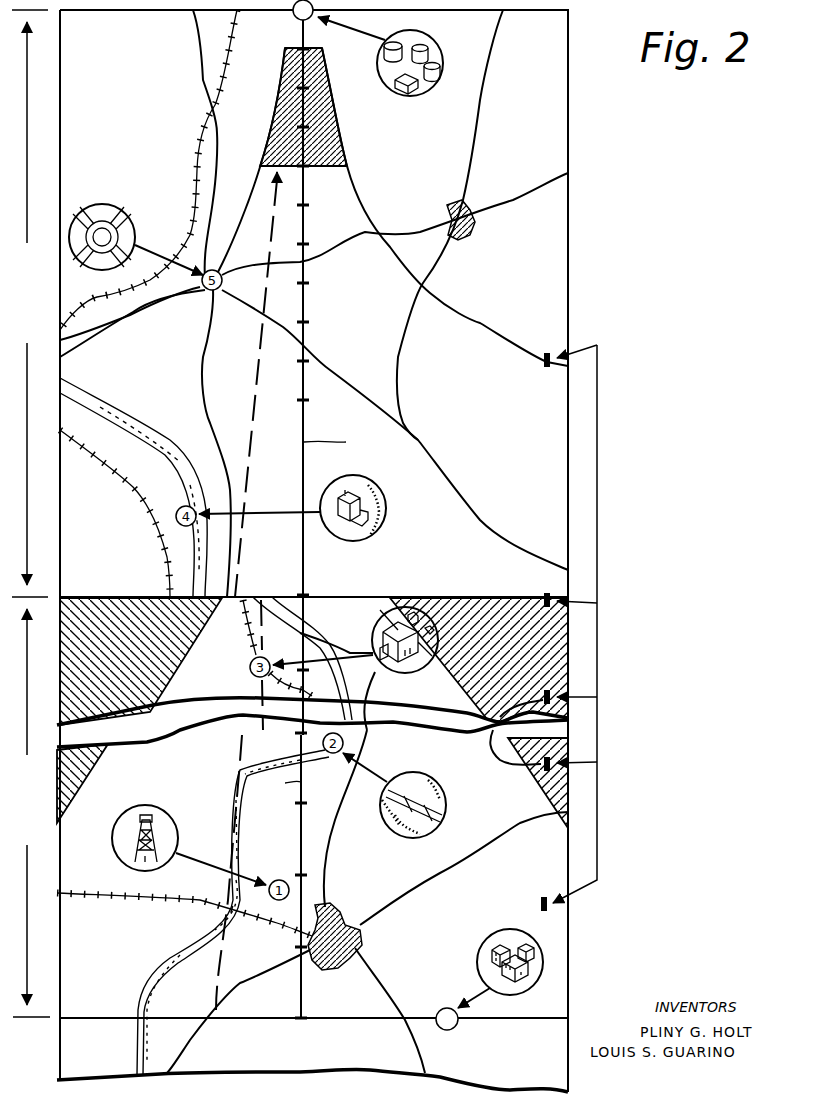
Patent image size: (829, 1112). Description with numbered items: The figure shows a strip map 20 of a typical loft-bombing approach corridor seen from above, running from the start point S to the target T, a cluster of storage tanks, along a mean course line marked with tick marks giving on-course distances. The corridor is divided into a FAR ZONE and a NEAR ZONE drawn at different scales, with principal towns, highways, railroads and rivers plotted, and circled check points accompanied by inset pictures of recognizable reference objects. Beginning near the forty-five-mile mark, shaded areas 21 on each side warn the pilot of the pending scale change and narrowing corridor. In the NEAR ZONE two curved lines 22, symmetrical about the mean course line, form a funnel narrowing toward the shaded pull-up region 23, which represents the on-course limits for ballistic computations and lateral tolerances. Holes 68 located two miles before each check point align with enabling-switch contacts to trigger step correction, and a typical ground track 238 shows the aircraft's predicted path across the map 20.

The strip map 20 is at (290, 546).
The shaded area 21 is at (150, 657).
The curved lines 22 is at (224, 222).
The pull-up region 23 is at (324, 128).
The hole 68 is at (547, 370).
The ground track 238 is at (250, 442).